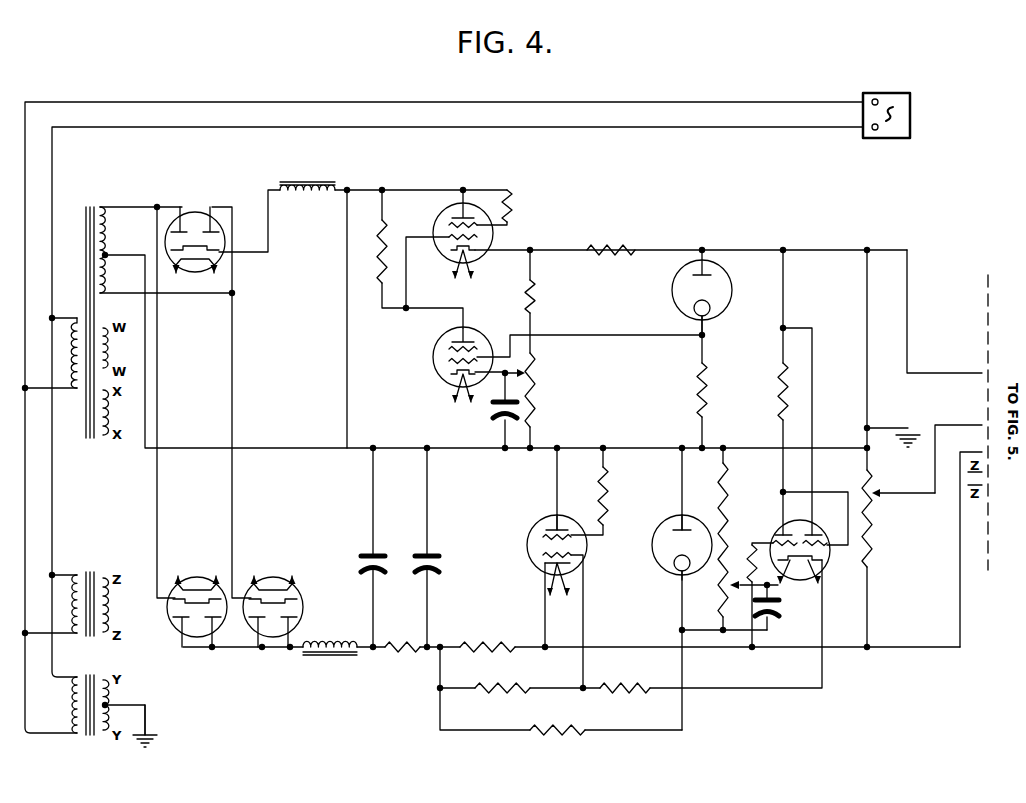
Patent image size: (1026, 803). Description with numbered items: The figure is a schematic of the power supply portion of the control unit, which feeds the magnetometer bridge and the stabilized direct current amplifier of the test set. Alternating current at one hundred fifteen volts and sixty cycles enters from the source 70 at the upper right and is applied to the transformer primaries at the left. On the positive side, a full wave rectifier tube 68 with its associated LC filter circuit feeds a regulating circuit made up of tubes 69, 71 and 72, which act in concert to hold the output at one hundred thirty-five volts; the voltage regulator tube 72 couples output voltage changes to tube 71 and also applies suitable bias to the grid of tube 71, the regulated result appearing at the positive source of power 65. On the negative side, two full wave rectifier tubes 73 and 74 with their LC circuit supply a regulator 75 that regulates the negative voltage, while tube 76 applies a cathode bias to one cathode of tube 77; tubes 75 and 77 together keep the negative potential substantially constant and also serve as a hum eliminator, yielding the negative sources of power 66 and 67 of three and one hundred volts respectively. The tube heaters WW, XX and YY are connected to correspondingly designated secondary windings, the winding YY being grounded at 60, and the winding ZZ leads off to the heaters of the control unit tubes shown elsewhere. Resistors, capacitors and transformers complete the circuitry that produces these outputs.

The ground connection 60 is at (145, 719).
The positive source of power 65 is at (972, 376).
The negative source of power 66 is at (964, 427).
The negative source of power 67 is at (975, 450).
The full wave rectifier tube 68 is at (222, 238).
The tube 69 is at (493, 238).
The source of alternating current 70 is at (897, 93).
The tube 71 is at (478, 332).
The voltage regulator tube 72 is at (732, 292).
The full wave rectifier tube 73 is at (168, 612).
The full wave rectifier tube 74 is at (300, 593).
The regulator 75 is at (538, 521).
The tube 76 is at (667, 521).
The tube 77 is at (777, 521).